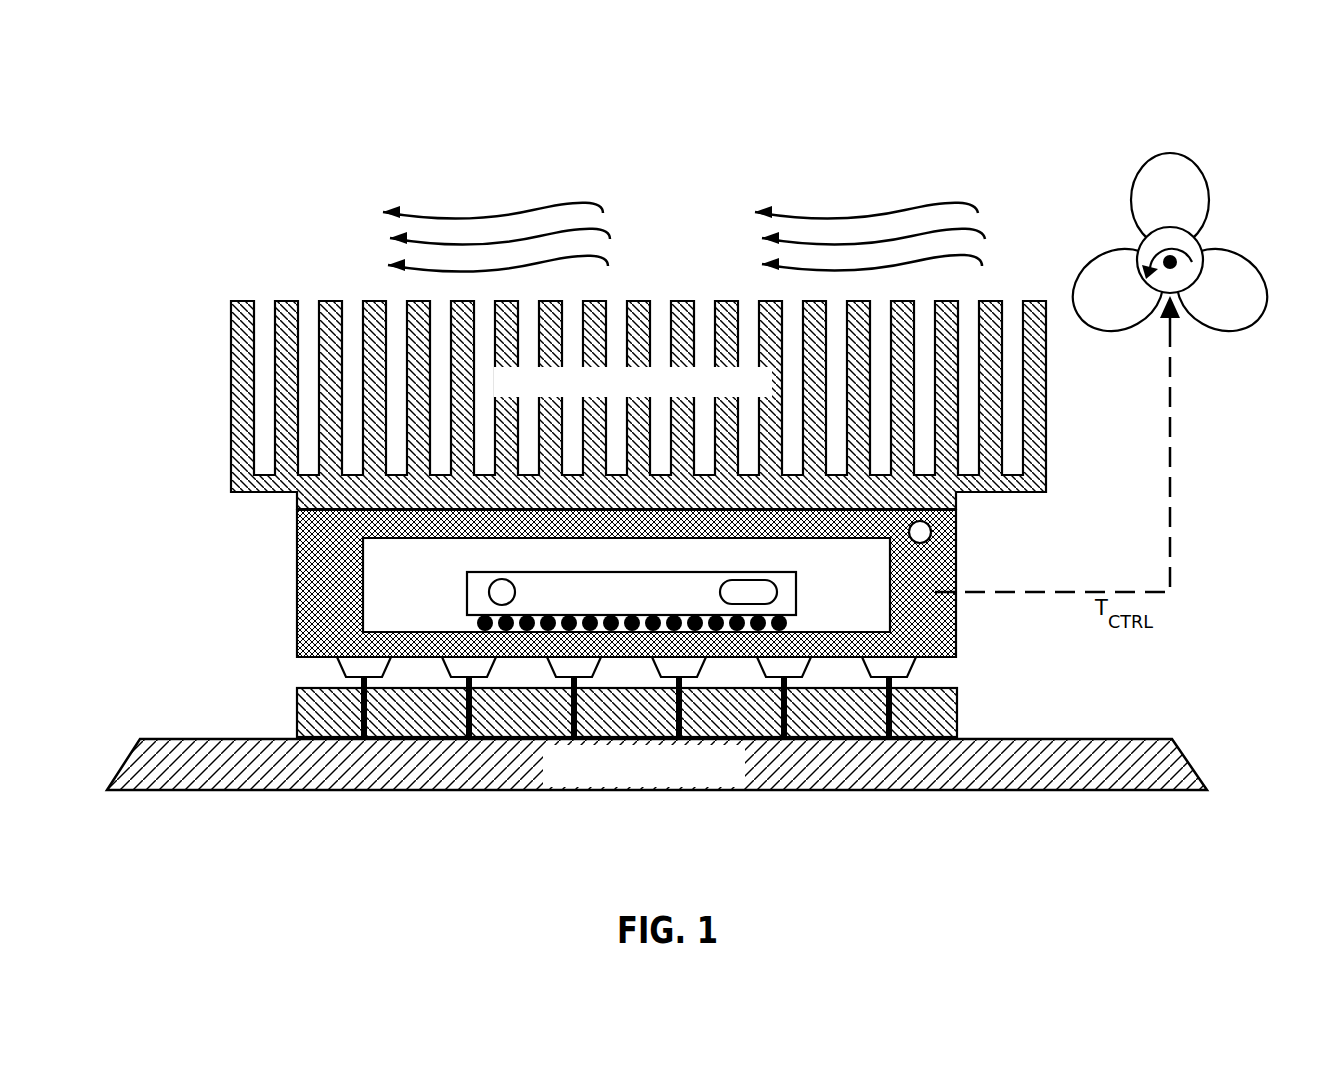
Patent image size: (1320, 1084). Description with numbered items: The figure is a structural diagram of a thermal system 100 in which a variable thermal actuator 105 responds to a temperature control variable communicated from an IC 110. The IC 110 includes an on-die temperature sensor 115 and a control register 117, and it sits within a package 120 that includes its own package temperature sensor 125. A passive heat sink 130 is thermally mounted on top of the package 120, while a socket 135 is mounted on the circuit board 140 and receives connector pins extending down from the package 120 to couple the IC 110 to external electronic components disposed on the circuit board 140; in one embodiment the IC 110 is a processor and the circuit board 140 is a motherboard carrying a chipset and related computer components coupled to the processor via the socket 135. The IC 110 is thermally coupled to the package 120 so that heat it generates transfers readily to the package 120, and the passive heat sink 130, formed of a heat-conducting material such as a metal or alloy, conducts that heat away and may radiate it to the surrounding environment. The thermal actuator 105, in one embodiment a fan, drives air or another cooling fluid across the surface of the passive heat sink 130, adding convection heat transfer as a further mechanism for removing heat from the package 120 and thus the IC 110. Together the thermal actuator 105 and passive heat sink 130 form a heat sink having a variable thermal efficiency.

The thermal system 100 is at (247, 135).
The thermal actuator 105 is at (1210, 205).
The IC 110 is at (665, 609).
The on-die temperature sensor 115 is at (490, 590).
The control register 117 is at (779, 577).
The package 120 is at (293, 649).
The package temperature sensor 125 is at (930, 538).
The passive heat sink 130 is at (758, 396).
The socket 135 is at (958, 706).
The circuit board 140 is at (733, 780).